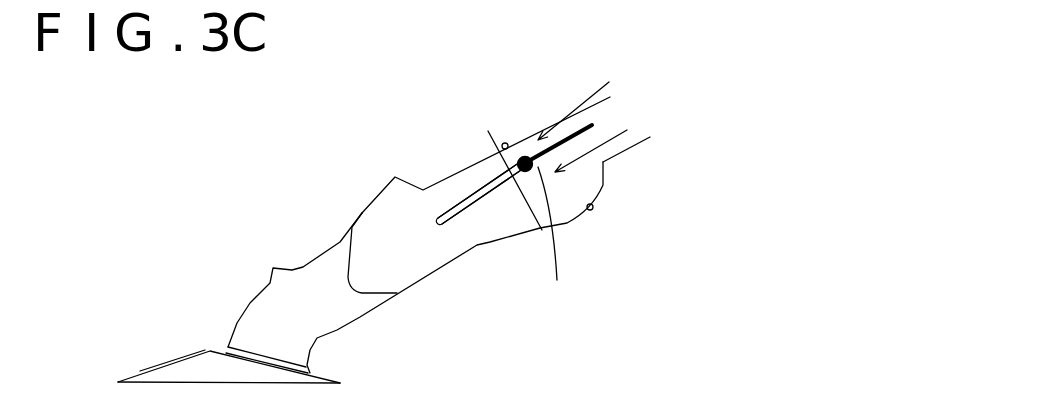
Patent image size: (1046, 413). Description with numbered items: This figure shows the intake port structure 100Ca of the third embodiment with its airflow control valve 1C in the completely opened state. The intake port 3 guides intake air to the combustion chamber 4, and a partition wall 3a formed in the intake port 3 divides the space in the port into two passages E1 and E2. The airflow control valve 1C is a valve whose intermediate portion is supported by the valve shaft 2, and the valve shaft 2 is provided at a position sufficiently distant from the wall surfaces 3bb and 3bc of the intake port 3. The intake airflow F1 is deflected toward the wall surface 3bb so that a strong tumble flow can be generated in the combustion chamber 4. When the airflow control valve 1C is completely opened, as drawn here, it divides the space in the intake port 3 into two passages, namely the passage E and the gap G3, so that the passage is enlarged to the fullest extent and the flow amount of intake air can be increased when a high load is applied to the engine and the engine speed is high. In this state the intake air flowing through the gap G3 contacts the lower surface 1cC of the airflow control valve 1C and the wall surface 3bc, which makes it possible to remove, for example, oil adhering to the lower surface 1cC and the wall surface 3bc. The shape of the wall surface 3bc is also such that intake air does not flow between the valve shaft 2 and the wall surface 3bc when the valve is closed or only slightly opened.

The combustion chamber 4 is at (185, 370).
The intake port 3 is at (360, 213).
The partition wall 3a is at (455, 218).
The wall surface 3bb is at (490, 136).
The wall surface 3bc is at (590, 212).
The gap G3 is at (606, 168).
The passage E is at (540, 135).
The passage E1 is at (477, 185).
The passage E2 is at (502, 215).
The valve shaft 2 is at (527, 157).
The airflow control valve 1C is at (577, 125).
The lower surface 1cC is at (561, 235).
The intake airflow F1 is at (610, 96).
The intake port structure 100Ca is at (688, 91).